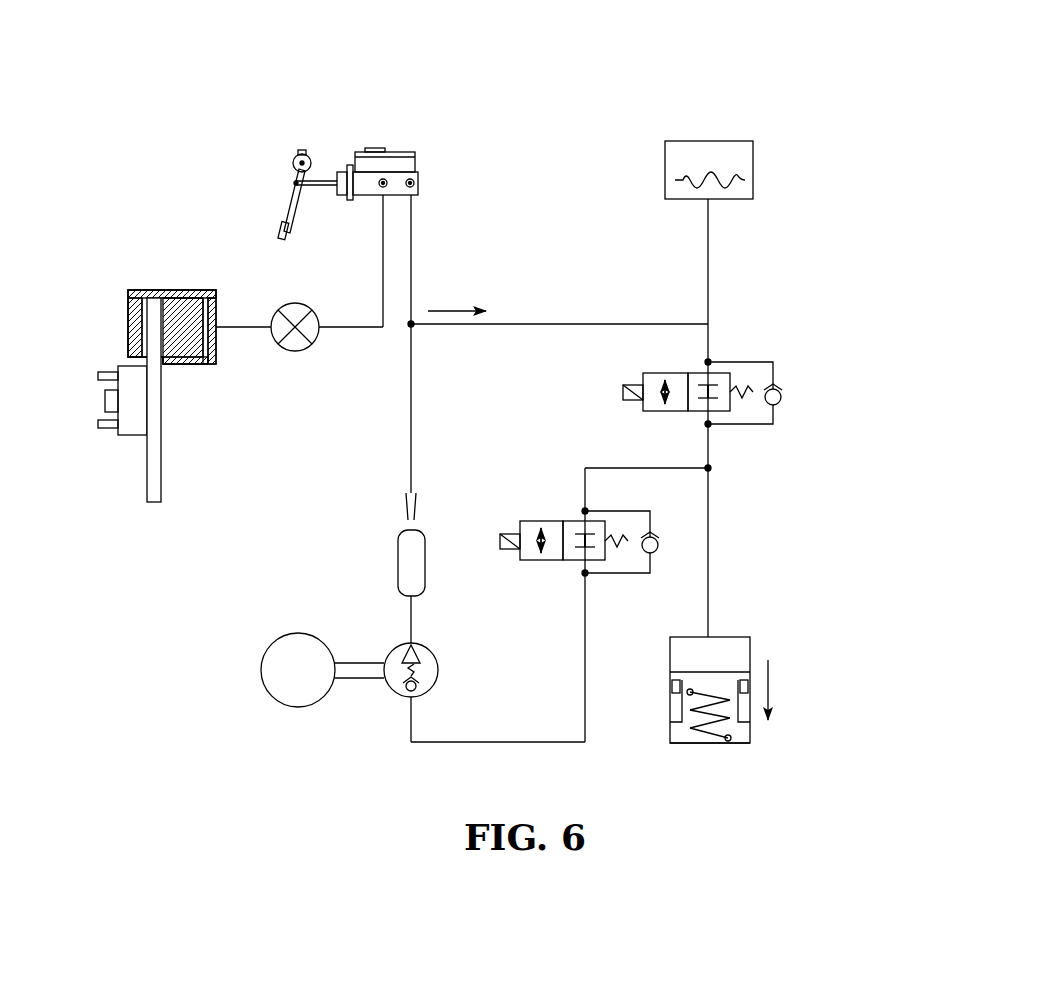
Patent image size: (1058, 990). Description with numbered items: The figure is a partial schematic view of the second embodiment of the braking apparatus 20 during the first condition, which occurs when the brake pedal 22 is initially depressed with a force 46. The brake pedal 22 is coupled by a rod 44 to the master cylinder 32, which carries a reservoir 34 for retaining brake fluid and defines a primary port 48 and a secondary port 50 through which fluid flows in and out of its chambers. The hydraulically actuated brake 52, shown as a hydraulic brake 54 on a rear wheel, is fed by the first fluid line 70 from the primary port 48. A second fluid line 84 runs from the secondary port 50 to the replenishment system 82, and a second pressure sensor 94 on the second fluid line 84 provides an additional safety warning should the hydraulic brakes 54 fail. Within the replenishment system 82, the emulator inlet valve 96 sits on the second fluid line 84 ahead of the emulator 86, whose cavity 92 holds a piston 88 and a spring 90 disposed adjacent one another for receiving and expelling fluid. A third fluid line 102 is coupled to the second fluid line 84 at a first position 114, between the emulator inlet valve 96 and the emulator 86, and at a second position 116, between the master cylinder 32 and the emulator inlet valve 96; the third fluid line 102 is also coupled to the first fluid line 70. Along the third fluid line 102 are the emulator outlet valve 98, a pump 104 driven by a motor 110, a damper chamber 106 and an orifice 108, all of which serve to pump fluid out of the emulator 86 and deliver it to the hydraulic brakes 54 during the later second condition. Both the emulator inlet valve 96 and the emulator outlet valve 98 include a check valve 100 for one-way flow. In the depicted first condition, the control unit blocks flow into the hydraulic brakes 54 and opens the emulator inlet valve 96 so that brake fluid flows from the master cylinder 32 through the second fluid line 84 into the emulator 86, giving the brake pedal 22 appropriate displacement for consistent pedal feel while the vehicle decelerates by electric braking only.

The braking apparatus 20 is at (140, 148).
The brake pedal 22 is at (297, 208).
The master cylinder 32 is at (366, 196).
The reservoir 34 is at (397, 160).
The rod 44 is at (319, 182).
The force 46 is at (264, 232).
The primary port 48 is at (387, 186).
The secondary port 50 is at (414, 182).
The hydraulically actuated brake 52 is at (106, 291).
The hydraulic brakes 54 is at (180, 366).
The first fluid line 70 is at (335, 338).
The replenishment system 82 is at (823, 456).
The second fluid line 84 is at (510, 324).
The emulator 86 is at (672, 723).
The piston 88 is at (674, 705).
The spring 90 is at (726, 714).
The cavity 92 is at (742, 652).
The second pressure sensor 94 is at (738, 141).
The emulator inlet valve 96 is at (633, 374).
The emulator outlet valve 98 is at (530, 521).
The check valve 100 is at (780, 390).
The third fluid line 102 is at (409, 400).
The pump 104 is at (433, 656).
The damper chamber 106 is at (398, 576).
The orifice 108 is at (404, 501).
The motor 110 is at (268, 690).
The first position 114 is at (710, 468).
The second position 116 is at (412, 326).